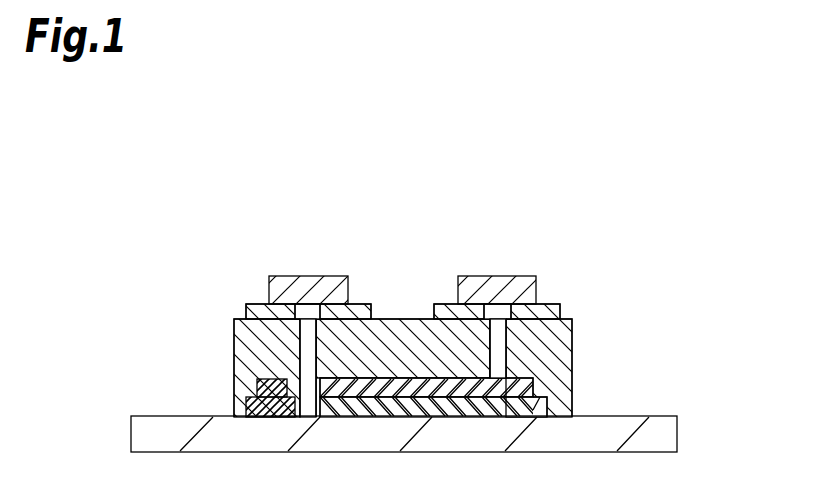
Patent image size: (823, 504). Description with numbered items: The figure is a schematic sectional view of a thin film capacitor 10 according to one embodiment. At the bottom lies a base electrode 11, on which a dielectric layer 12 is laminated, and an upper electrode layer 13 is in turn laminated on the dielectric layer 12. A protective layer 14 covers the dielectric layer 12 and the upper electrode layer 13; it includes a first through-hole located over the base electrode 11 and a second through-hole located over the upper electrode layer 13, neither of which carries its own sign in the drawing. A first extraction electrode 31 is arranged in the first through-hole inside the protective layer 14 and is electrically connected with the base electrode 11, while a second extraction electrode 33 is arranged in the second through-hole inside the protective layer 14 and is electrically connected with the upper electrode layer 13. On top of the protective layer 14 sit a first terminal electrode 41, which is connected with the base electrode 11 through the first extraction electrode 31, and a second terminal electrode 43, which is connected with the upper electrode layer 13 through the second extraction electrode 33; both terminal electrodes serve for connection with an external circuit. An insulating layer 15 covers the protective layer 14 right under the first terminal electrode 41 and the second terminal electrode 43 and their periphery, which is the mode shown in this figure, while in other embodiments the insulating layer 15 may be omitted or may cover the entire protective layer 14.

The thin film capacitor 10 is at (590, 218).
The base electrode 11 is at (678, 431).
The dielectric layer 12 is at (548, 407).
The upper electrode layer 13 is at (534, 389).
The protective layer 14 is at (234, 341).
The insulating layer 15 is at (560, 312).
The first extraction electrode 31 is at (300, 352).
The second extraction electrode 33 is at (507, 349).
The first terminal electrode 41 is at (307, 276).
The second terminal electrode 43 is at (497, 276).